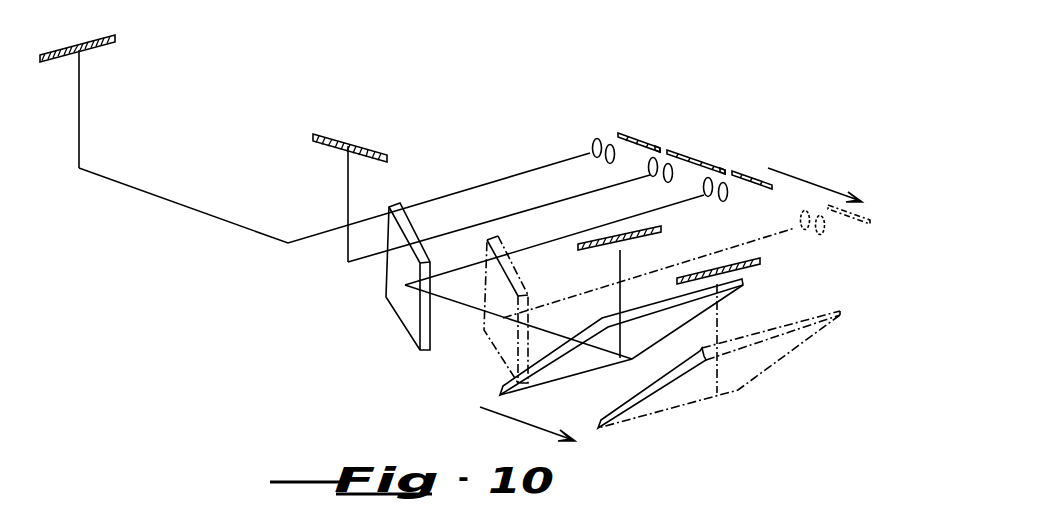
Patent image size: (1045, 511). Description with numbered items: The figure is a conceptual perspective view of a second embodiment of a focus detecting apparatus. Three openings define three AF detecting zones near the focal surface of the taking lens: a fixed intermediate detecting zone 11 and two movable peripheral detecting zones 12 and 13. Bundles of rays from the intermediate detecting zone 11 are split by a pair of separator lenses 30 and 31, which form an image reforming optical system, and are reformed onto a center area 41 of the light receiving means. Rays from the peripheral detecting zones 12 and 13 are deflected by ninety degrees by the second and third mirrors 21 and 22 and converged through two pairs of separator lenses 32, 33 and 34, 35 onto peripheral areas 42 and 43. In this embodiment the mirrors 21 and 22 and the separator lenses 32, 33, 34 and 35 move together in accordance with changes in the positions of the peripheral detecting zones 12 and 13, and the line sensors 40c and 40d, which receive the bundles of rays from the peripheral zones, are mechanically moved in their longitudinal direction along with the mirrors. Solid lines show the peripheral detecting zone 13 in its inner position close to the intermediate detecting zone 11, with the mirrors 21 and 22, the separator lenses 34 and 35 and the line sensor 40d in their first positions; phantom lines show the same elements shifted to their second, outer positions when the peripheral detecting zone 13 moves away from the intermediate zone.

The intermediate AF detecting zone 11 is at (378, 155).
The peripheral AF detecting zone 12 is at (116, 40).
The peripheral AF detecting zone 13 is at (645, 233).
The second mirror 21 is at (573, 375).
The third mirror 22 is at (412, 332).
The separator lens 30 is at (652, 164).
The separator lens 31 is at (668, 183).
The separator lens 32 is at (607, 163).
The separator lens 33 is at (594, 141).
The separator lens 34 is at (705, 196).
The separator lens 35 is at (723, 202).
The line sensor 40c is at (657, 148).
The line sensor 40d is at (725, 172).
The center area of line sensor 41 is at (703, 158).
The peripheral area of line sensor 42 is at (640, 132).
The peripheral area of line sensor 43 is at (760, 175).